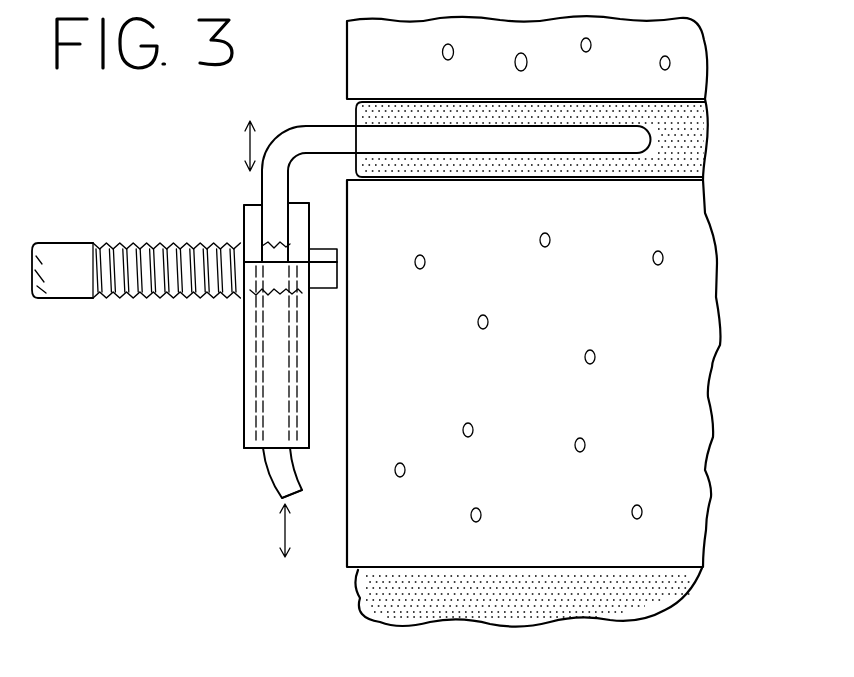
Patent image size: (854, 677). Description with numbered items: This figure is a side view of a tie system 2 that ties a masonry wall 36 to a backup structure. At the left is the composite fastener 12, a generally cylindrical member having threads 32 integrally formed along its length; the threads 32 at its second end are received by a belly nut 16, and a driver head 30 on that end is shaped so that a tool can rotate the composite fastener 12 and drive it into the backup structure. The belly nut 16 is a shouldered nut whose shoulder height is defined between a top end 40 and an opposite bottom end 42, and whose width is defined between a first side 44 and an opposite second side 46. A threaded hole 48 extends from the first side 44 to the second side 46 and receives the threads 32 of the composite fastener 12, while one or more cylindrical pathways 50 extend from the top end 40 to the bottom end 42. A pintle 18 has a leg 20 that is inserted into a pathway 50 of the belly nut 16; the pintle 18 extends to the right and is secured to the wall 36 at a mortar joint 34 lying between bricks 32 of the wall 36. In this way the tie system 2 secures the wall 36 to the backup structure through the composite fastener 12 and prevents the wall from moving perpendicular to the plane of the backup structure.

The tie system 2 is at (191, 408).
The composite fastener 12 is at (67, 297).
The belly nut 16 is at (242, 322).
The pintle 18 is at (290, 125).
The leg 20 is at (268, 484).
The driver head 30 is at (337, 285).
The threads 32 is at (347, 72).
The mortar joint 34 is at (410, 168).
The wall 36 is at (728, 587).
The top end 40 is at (251, 204).
The bottom end 42 is at (302, 452).
The first side 44 is at (245, 355).
The second side 46 is at (311, 385).
The threaded hole 48 is at (253, 244).
The pathways 50 is at (253, 407).